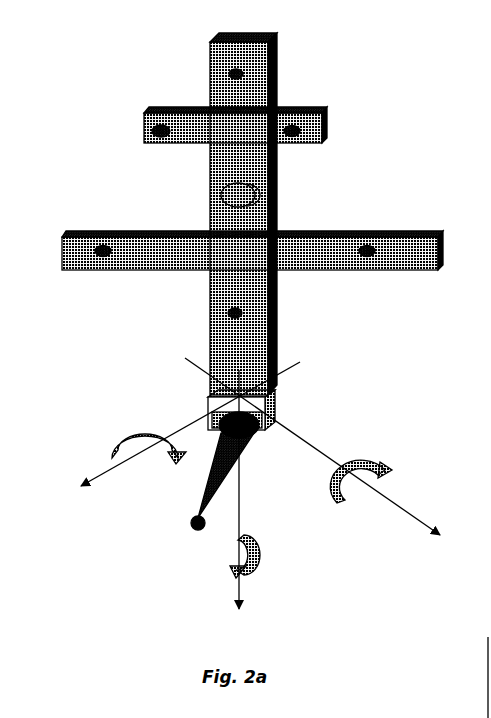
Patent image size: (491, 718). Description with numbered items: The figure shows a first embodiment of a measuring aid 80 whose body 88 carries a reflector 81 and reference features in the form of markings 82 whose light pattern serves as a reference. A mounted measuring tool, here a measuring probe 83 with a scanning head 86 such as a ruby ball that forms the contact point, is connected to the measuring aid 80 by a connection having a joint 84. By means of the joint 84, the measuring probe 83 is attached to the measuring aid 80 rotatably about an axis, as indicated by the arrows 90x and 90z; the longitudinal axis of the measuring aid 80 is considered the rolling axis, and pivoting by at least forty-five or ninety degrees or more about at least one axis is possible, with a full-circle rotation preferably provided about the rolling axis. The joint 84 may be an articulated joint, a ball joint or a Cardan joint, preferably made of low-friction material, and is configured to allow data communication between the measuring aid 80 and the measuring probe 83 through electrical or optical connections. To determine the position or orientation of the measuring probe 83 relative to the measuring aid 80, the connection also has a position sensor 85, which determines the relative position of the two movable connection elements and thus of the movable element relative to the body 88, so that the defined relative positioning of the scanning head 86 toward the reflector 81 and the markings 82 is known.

The measuring aid 80 is at (134, 116).
The reflector 81 is at (277, 196).
The markings 82 is at (295, 126).
The measuring probe 83 is at (227, 480).
The joint 84 is at (194, 409).
The position sensor 85 is at (265, 420).
The scanning head 86 is at (205, 525).
The body 88 is at (263, 166).
The arrow indicating rotation about the z-axis 90z is at (118, 443).
The arrow indicating rotation about the x-axis 90x is at (375, 458).